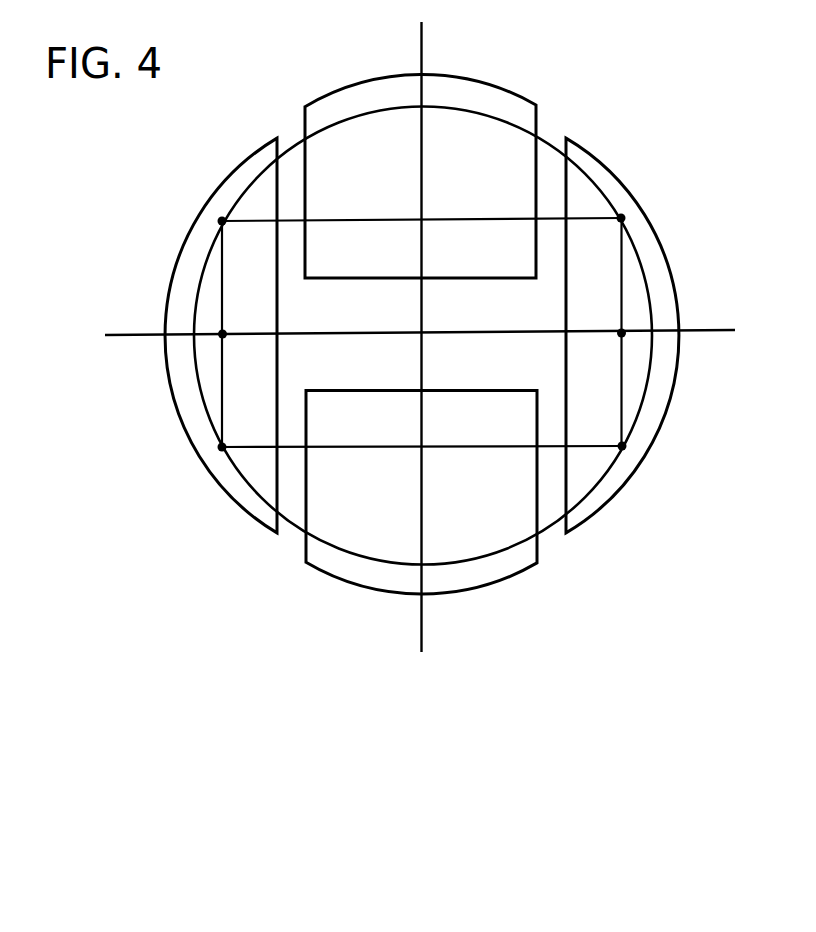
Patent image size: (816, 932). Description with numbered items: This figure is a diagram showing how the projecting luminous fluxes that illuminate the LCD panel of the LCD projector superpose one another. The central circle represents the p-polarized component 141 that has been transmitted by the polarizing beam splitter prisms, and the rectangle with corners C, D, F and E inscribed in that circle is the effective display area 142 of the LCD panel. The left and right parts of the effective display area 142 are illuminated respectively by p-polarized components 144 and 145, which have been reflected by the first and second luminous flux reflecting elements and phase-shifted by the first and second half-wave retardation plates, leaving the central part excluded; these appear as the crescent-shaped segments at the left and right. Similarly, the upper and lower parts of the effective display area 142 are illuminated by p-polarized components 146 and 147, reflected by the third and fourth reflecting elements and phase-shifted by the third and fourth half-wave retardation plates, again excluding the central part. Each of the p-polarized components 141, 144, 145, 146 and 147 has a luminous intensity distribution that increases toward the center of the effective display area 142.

The p-polarized component 141 is at (548, 140).
The effective display area 142 is at (647, 280).
The p-polarized component 144 is at (240, 505).
The p-polarized component 145 is at (643, 458).
The p-polarized component 146 is at (500, 84).
The p-polarized component 147 is at (480, 587).